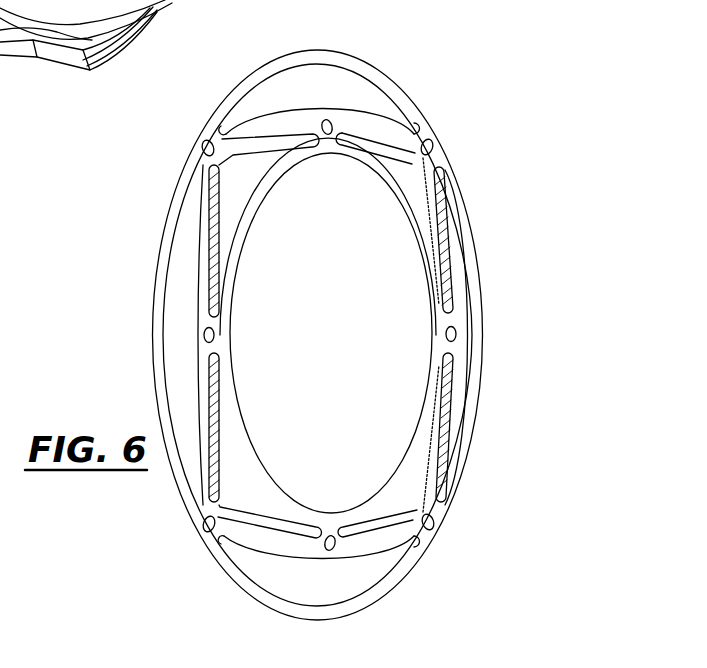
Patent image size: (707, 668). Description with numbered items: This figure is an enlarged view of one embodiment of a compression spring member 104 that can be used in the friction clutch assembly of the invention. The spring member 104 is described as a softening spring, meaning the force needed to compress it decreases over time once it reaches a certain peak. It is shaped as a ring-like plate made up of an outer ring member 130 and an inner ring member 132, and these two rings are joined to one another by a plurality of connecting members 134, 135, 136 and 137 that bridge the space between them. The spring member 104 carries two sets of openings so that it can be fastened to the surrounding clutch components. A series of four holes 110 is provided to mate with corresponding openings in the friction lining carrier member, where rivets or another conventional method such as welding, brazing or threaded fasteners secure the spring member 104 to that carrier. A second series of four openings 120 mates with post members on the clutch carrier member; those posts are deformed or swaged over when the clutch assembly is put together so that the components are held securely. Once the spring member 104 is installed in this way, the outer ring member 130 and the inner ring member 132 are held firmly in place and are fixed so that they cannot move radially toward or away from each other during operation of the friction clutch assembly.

The compression spring member 104 is at (102, 339).
The holes 110 is at (202, 146).
The openings 120 is at (322, 125).
The outer ring member 130 is at (478, 398).
The inner ring member 132 is at (423, 243).
The connecting member 134 is at (440, 231).
The connecting member 135 is at (381, 130).
The connecting member 136 is at (203, 253).
The connecting member 137 is at (278, 538).